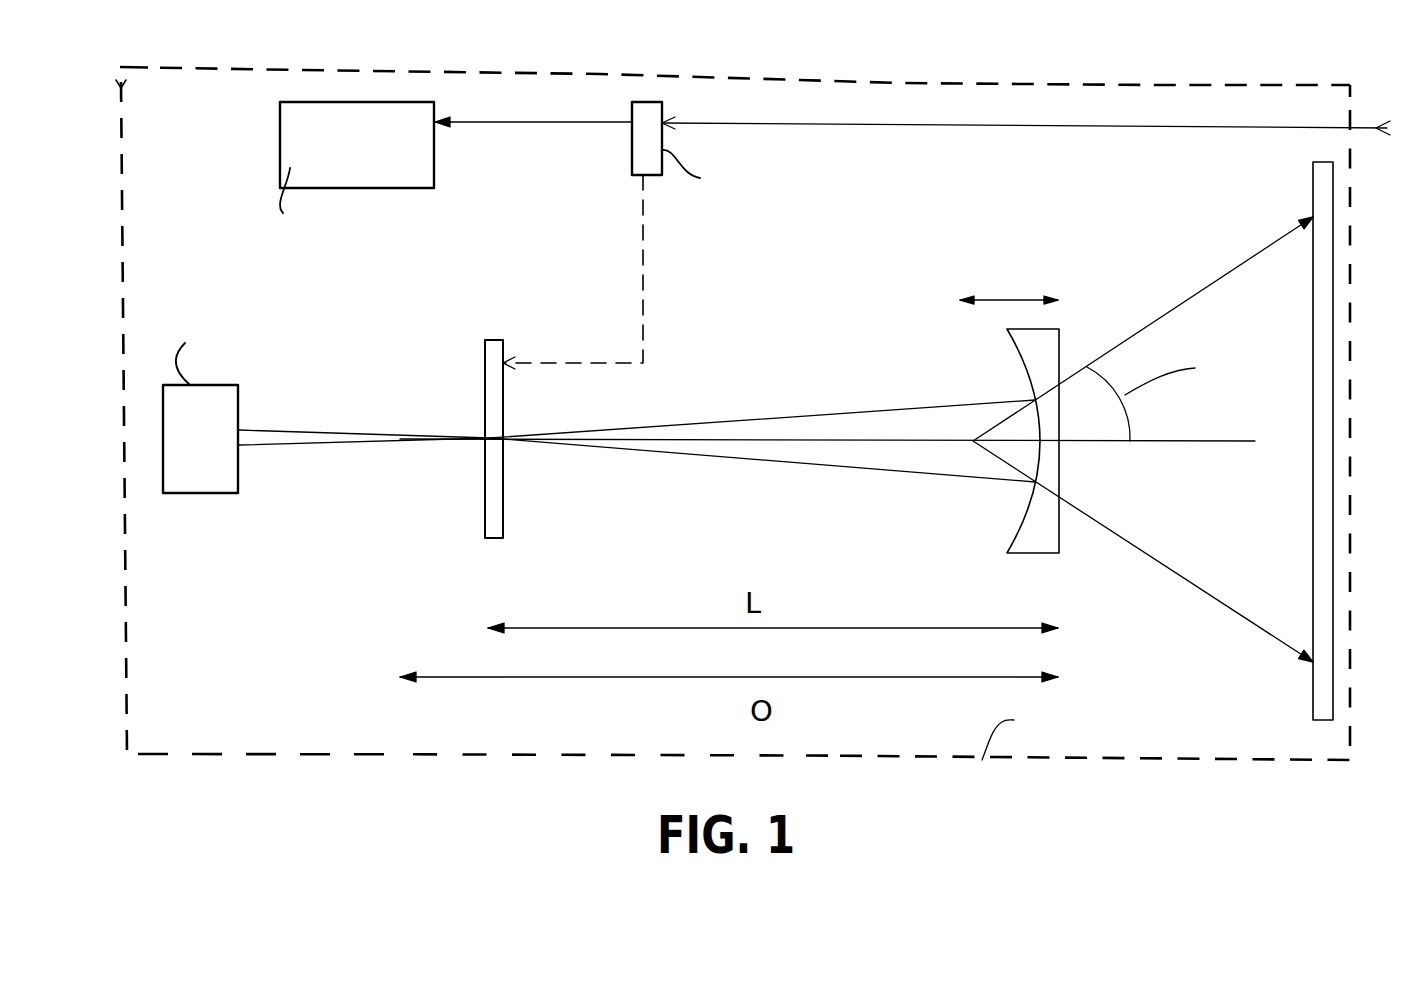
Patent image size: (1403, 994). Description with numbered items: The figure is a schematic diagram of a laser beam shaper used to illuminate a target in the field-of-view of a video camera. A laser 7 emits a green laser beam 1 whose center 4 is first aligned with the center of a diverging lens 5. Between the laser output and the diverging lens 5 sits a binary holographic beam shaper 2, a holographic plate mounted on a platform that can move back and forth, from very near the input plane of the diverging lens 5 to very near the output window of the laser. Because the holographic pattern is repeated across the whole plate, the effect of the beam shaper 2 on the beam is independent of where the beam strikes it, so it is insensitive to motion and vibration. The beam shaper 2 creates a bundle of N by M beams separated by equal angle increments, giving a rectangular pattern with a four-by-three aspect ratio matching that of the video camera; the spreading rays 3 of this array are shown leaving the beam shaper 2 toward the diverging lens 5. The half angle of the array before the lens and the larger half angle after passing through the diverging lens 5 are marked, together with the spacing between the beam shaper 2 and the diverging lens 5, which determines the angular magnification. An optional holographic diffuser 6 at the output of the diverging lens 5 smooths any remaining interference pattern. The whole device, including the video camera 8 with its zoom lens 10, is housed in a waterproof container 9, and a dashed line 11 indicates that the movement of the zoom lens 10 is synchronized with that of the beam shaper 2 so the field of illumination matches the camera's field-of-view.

The laser beam 1 is at (275, 430).
The binary holographic laser beam shaper 2 is at (491, 340).
The lower light ray 3 is at (708, 415).
The center of the laser beam 4 is at (632, 437).
The diverging lens 5 is at (1035, 553).
The optional holographic diffuser 6 is at (1333, 628).
The laser 7 is at (179, 478).
The video camera 8 is at (407, 147).
The waterproof container 9 is at (860, 756).
The zoom lens 10 is at (632, 148).
The dashed line 11 is at (643, 290).